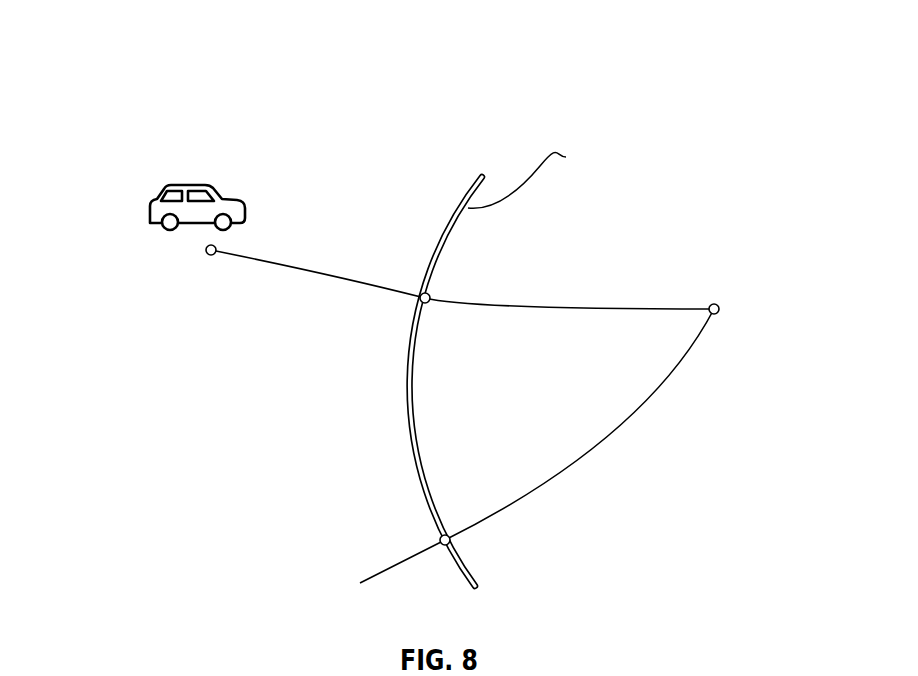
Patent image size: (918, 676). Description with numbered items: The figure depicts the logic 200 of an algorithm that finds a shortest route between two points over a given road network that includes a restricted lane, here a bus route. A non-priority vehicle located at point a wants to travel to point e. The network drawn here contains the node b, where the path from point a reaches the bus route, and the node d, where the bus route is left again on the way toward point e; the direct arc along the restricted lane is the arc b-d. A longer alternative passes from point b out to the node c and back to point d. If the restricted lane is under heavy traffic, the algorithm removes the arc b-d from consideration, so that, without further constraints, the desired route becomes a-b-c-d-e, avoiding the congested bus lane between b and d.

The shortest route algorithm logic 200 is at (435, 320).
The point a is at (210, 268).
The point b is at (416, 282).
The point c is at (712, 291).
The point d is at (440, 558).
The point e is at (346, 583).